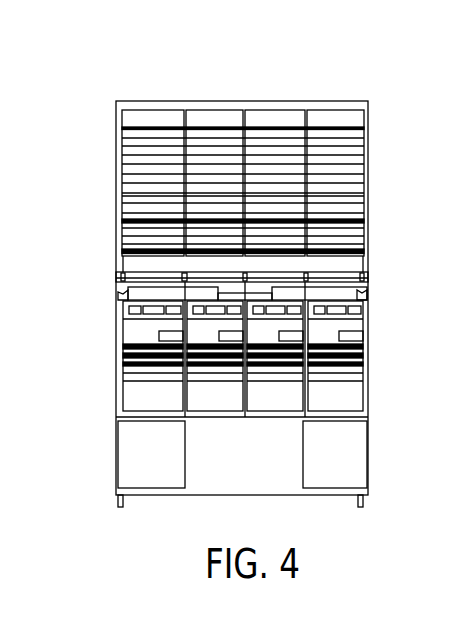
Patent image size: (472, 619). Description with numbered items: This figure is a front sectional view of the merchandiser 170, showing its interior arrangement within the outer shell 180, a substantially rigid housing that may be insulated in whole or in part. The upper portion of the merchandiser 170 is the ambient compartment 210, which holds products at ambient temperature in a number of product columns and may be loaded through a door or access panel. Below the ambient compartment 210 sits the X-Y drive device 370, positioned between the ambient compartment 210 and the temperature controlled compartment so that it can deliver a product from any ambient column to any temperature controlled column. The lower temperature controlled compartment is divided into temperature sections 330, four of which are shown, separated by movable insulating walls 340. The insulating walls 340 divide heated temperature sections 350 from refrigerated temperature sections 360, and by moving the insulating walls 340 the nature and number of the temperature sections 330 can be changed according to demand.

The merchandiser 170 is at (115, 89).
The outer shell 180 is at (248, 154).
The ambient compartment 210 is at (352, 118).
The X-Y drive device 370 is at (115, 272).
The temperature sections 330 is at (130, 398).
The movable insulating walls 340 is at (247, 413).
The heated temperature sections 350 is at (212, 402).
The refrigerated temperature sections 360 is at (288, 402).